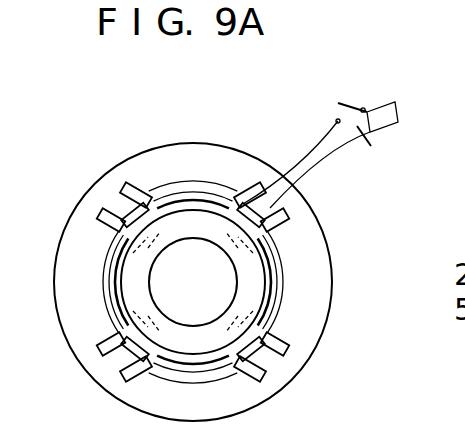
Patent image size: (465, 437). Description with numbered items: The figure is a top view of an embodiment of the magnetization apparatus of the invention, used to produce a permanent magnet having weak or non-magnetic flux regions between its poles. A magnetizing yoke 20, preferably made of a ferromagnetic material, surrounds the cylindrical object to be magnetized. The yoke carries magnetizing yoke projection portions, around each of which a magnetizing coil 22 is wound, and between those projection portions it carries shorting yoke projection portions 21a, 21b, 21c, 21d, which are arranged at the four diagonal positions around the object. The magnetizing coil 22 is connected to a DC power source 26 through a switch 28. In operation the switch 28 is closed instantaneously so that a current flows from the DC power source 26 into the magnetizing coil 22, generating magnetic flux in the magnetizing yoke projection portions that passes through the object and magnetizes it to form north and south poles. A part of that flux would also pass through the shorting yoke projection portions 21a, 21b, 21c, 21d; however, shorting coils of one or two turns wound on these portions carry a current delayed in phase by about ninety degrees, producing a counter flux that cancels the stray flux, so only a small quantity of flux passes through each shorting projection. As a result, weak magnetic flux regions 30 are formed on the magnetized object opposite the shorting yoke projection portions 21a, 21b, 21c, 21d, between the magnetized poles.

The magnetizing yoke 20 is at (308, 297).
The shorting yoke projection portion 21a is at (268, 196).
The shorting yoke projection portion 21b is at (273, 360).
The shorting yoke projection portion 21c is at (113, 365).
The shorting yoke projection portion 21d is at (103, 205).
The magnetizing coil 22 is at (333, 160).
The DC power source 26 is at (371, 140).
The switch 28 is at (363, 108).
The weak magnetic flux region 30 is at (177, 240).